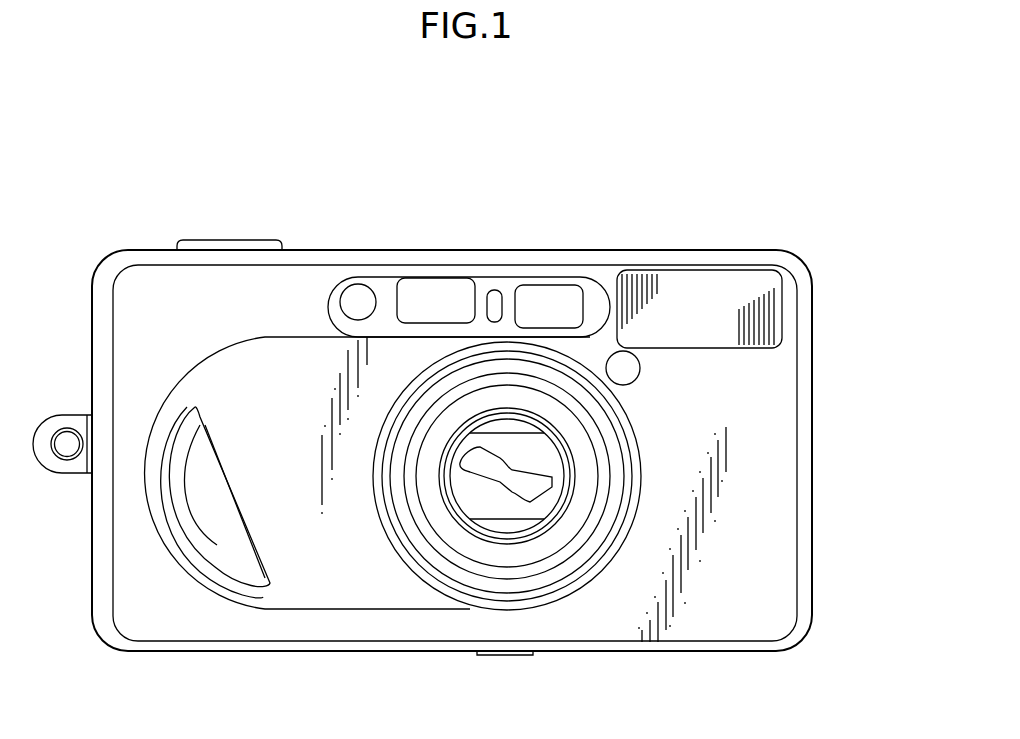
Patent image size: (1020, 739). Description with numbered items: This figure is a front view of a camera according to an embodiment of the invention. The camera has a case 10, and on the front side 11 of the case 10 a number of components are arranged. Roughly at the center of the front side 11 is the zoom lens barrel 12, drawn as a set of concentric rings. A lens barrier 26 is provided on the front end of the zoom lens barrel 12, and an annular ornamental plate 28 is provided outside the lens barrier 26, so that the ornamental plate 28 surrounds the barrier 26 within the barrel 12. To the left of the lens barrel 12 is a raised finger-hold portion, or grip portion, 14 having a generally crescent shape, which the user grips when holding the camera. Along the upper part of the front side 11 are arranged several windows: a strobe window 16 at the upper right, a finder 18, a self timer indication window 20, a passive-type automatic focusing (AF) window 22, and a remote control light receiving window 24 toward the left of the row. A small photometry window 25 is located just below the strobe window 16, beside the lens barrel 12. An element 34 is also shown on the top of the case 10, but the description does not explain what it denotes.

The case 10 is at (816, 380).
The front side 11 is at (137, 290).
The zoom lens barrel 12 is at (533, 562).
The raised finger-hold portion 14 is at (221, 521).
The strobe window 16 is at (707, 289).
The finder 18 is at (557, 300).
The self timer indication window 20 is at (495, 300).
The passive-type automatic focusing window 22 is at (435, 287).
The remote control light receiving window 24 is at (360, 297).
The photometry window 25 is at (628, 372).
The lens barrier 26 is at (472, 487).
The annular ornamental plate 28 is at (453, 530).
The shutter release button 34 is at (235, 242).